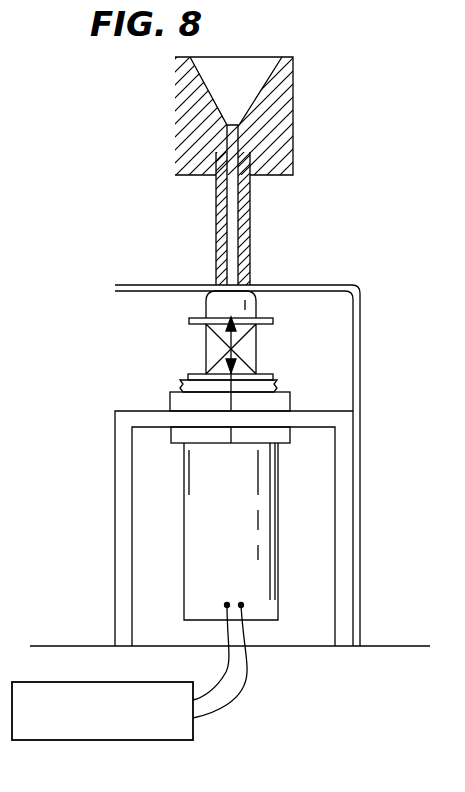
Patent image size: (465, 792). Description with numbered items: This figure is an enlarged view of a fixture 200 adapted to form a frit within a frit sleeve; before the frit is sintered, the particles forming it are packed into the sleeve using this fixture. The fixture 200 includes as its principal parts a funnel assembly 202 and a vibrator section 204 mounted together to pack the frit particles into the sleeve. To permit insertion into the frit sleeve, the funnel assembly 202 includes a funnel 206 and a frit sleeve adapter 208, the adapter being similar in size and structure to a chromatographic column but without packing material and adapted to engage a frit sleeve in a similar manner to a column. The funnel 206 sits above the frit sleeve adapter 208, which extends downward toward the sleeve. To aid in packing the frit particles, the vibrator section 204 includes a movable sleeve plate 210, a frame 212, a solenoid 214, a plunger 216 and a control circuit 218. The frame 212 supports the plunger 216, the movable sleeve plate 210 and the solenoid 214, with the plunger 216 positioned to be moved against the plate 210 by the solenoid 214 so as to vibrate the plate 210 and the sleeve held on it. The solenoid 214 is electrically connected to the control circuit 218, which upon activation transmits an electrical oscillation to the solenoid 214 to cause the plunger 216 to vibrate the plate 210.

The fixture 200 is at (400, 107).
The funnel assembly 202 is at (325, 258).
The vibrator section 204 is at (382, 287).
The funnel 206 is at (175, 68).
The frit sleeve adapter 208 is at (216, 218).
The movable sleeve plate 210 is at (166, 286).
The frame 212 is at (142, 418).
The solenoid 214 is at (198, 524).
The plunger 216 is at (212, 356).
The control circuit 218 is at (66, 683).